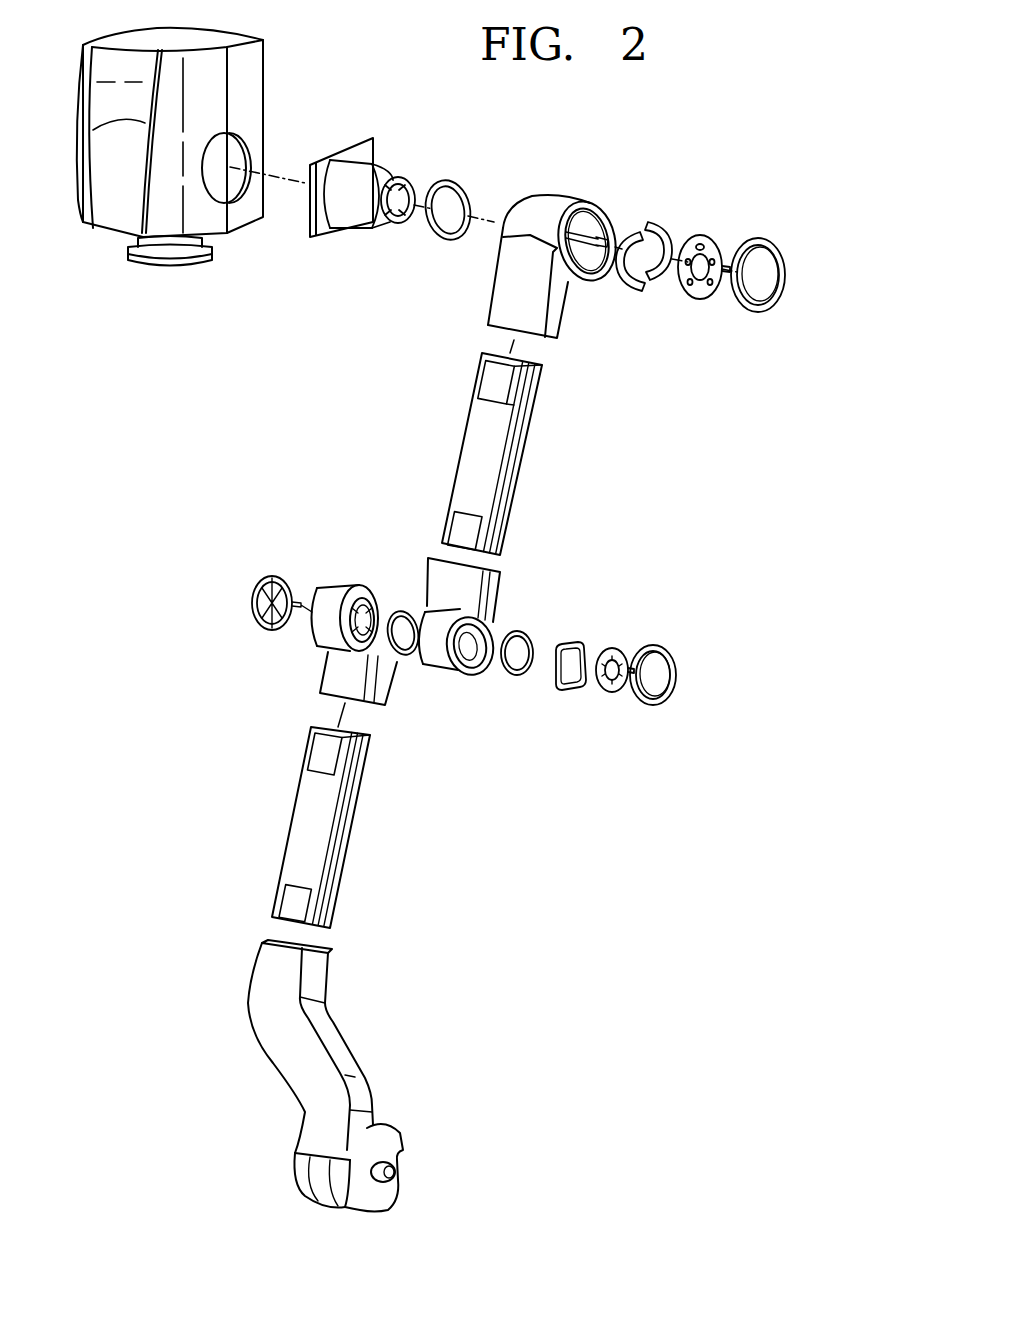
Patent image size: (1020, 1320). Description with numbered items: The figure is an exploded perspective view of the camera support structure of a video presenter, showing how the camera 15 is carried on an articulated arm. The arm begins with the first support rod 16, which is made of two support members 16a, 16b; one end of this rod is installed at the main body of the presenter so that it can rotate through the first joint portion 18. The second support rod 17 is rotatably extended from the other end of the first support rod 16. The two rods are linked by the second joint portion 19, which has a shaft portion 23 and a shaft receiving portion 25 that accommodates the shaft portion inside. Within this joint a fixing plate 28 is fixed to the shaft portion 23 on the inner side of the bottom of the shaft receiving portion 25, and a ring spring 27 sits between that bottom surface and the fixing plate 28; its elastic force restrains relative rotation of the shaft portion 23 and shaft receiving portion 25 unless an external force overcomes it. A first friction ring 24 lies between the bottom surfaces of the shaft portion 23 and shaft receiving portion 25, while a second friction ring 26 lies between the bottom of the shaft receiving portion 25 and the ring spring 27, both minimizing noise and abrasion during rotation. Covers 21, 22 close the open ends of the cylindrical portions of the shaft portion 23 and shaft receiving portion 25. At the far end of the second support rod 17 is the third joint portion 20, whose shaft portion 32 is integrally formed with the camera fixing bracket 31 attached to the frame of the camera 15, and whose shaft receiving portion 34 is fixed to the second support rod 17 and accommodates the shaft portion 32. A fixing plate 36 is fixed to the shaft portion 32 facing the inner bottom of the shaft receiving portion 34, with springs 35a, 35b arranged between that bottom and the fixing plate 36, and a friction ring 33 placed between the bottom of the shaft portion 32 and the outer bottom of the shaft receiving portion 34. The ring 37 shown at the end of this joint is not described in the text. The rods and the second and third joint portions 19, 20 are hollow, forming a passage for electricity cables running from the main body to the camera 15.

The camera 15 is at (292, 73).
The first support rod 16 is at (448, 832).
The support member 16a is at (358, 815).
The support member 16b is at (330, 1020).
The second support rod 17 is at (530, 450).
The first joint portion 18 is at (436, 1140).
The second joint portion 19 is at (695, 630).
The third joint portion 20 is at (712, 342).
The cover 21 is at (265, 578).
The cover 22 is at (665, 688).
The shaft portion 23 is at (342, 587).
The first friction ring 24 is at (402, 611).
The shaft receiving portion 25 is at (437, 676).
The second friction ring 26 is at (512, 676).
The ring spring 27 is at (567, 644).
The fixing plate 28 is at (614, 648).
The camera fixing bracket 31 is at (352, 143).
The shaft portion 32 is at (390, 172).
The friction ring 33 is at (453, 181).
The shaft receiving portion 34 is at (544, 196).
The spring 35a is at (632, 232).
The spring 35b is at (660, 224).
The fixing plate 36 is at (706, 238).
The ring 37 is at (760, 240).